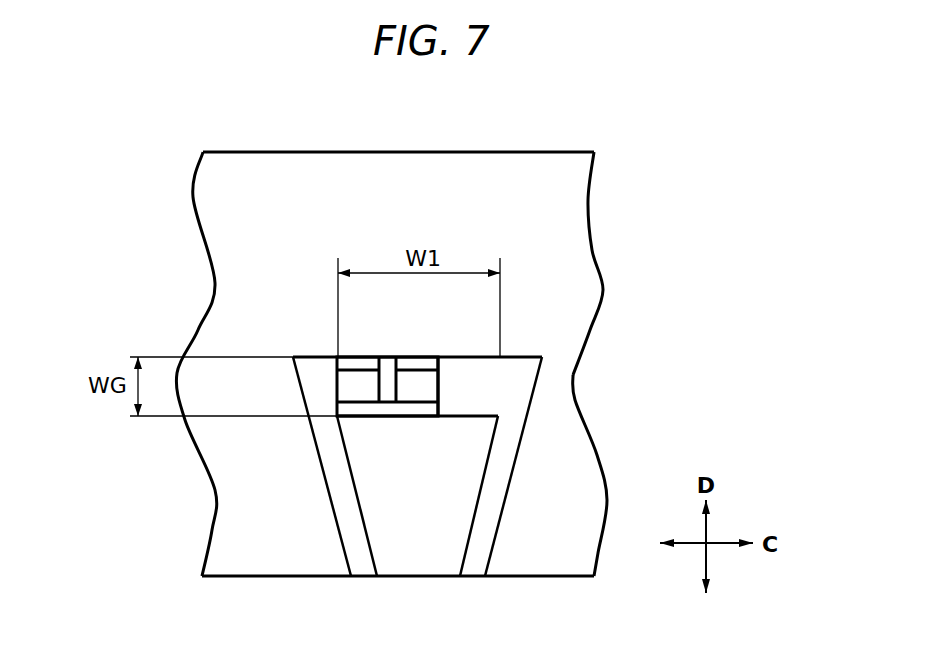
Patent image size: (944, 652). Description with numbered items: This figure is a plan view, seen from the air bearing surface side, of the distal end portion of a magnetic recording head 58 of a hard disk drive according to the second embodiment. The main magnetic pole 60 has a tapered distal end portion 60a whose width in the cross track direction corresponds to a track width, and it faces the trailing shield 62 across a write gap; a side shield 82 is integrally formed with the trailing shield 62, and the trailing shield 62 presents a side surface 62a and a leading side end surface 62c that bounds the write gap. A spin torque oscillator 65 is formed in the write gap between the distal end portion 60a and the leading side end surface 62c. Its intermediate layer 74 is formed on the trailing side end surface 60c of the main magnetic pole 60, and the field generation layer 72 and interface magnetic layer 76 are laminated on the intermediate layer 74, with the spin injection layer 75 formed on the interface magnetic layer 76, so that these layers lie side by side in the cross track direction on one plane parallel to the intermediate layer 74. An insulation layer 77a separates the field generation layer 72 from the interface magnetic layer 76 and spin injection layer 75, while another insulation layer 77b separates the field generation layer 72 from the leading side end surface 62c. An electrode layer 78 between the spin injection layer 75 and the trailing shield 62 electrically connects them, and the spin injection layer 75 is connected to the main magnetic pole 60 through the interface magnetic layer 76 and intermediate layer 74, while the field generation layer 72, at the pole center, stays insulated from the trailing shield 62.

The magnetic recording head 58 is at (645, 331).
The main magnetic pole 60 is at (431, 558).
The distal end portion 60a is at (402, 565).
The trailing side end surface 60c is at (465, 418).
The trailing shield 62 is at (512, 170).
The side surface 62a is at (572, 232).
The leading side end surface 62c is at (533, 357).
The spin torque oscillator 65 is at (372, 427).
The field generation layer 72 is at (423, 392).
The intermediate layer 74 is at (400, 410).
The spin injection layer 75 is at (347, 383).
The interface magnetic layer 76 is at (340, 398).
The insulation layer 77a is at (392, 362).
The insulation layer 77b is at (420, 363).
The electrode layer 78 is at (357, 362).
The side shield 82 is at (228, 527).